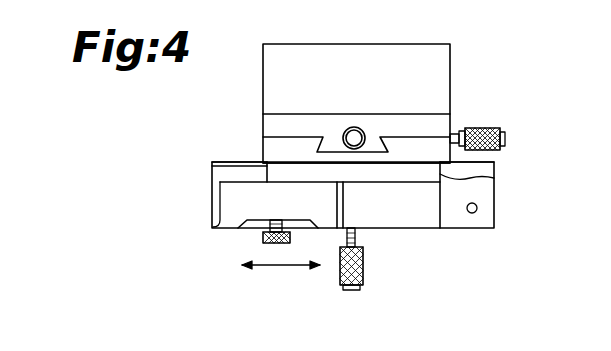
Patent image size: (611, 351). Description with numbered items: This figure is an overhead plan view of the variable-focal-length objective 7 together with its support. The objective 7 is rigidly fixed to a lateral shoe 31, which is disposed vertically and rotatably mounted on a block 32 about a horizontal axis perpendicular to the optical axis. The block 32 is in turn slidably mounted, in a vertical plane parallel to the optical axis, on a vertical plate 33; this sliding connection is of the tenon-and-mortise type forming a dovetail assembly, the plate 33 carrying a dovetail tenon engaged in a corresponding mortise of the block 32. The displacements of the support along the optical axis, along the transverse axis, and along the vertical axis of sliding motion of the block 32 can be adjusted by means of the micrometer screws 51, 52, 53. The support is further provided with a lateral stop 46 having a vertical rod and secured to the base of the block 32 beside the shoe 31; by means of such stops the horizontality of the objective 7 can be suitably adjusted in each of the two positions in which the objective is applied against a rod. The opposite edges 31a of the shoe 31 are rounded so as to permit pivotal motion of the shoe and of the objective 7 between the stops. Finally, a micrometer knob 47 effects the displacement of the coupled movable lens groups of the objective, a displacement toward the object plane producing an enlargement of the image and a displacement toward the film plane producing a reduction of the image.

The objective 7 is at (213, 195).
The lateral shoe 31 is at (397, 172).
The opposite edges of the shoe 31a is at (213, 167).
The block 32 is at (273, 147).
The vertical plate 33 is at (287, 127).
The lateral stop 46 is at (496, 221).
The micrometer knob 47 is at (265, 237).
The micrometer screw 51 is at (346, 131).
The micrometer screw 52 is at (340, 266).
The micrometer screw 53 is at (488, 128).